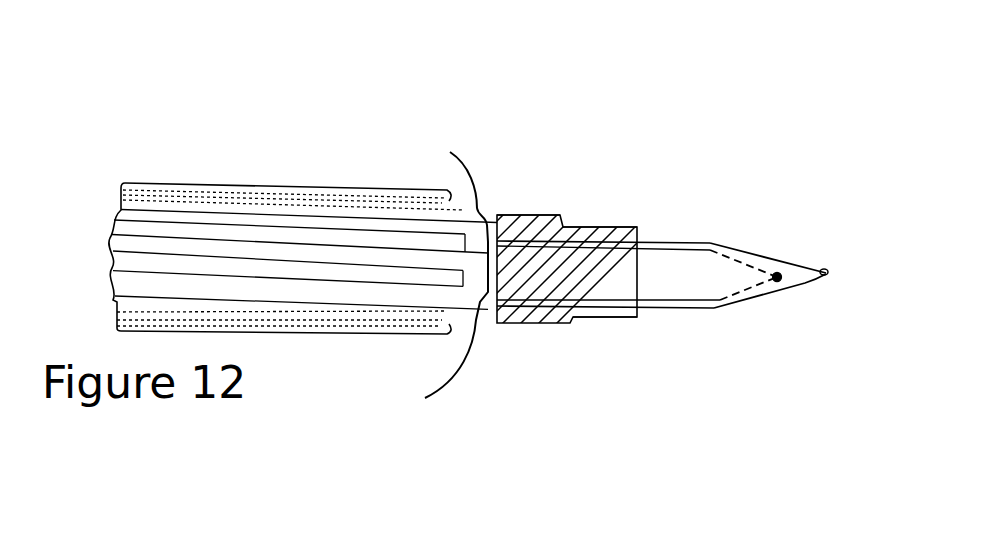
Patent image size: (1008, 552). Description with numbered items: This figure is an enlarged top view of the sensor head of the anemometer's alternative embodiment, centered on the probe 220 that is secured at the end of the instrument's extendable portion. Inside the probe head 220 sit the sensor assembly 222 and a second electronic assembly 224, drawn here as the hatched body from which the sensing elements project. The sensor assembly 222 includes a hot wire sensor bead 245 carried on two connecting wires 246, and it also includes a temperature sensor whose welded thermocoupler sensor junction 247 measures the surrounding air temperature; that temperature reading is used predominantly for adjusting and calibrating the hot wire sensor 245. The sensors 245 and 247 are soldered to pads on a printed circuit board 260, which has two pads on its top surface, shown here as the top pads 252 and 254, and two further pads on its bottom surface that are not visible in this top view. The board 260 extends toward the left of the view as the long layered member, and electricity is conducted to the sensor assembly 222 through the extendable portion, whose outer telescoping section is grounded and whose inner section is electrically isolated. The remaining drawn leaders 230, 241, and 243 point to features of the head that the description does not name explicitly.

The probe 220 is at (536, 313).
The sensor assembly 222 is at (608, 226).
The second electronic assembly 224 is at (593, 272).
The housing 230 is at (521, 215).
The support tube 241 is at (684, 316).
The support prong 243 is at (678, 243).
The hot wire sensor bead 245 is at (779, 264).
The connecting wires 246 is at (735, 243).
The thermocoupler sensor junction 247 is at (832, 268).
The top pad 252 is at (451, 190).
The top pad 254 is at (431, 339).
The printed circuit board 260 is at (113, 240).